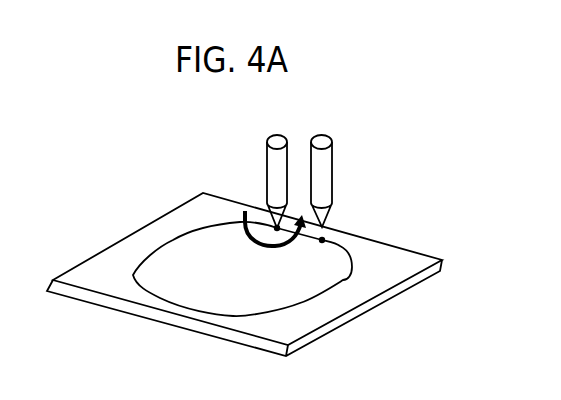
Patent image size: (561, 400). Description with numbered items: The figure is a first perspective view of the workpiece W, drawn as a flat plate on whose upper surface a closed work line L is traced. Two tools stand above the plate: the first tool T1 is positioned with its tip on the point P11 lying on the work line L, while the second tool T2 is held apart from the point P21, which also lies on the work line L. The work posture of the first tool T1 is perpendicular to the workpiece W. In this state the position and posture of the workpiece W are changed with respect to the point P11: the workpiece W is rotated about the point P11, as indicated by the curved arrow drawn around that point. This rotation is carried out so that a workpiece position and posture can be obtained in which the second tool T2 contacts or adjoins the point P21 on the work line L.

The first tool T1 is at (277, 165).
The second tool T2 is at (323, 163).
The point P11 is at (273, 225).
The point P21 is at (323, 239).
The workpiece W is at (403, 265).
The work line L is at (343, 282).